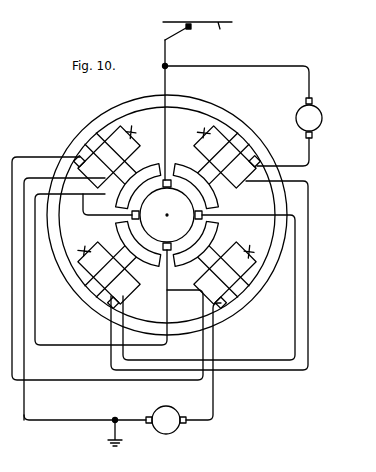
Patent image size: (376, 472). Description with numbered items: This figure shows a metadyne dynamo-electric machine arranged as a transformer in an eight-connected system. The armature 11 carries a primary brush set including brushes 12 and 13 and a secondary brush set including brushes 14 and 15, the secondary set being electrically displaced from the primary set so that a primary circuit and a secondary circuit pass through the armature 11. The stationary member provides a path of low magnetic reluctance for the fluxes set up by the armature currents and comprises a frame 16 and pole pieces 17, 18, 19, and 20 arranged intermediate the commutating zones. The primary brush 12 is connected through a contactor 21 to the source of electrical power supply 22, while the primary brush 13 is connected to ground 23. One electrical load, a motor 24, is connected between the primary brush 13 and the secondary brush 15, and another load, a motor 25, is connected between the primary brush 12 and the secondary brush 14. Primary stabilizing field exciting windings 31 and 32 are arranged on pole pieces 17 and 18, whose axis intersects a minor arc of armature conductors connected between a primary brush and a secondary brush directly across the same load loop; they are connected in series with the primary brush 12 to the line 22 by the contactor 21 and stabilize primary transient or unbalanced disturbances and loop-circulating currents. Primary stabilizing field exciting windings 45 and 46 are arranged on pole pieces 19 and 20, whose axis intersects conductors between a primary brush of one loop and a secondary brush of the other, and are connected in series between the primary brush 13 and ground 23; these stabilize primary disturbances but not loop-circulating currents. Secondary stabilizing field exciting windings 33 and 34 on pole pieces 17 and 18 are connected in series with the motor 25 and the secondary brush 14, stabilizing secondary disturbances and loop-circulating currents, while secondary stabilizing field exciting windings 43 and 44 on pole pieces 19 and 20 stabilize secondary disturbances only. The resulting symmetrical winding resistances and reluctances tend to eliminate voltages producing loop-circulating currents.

The armature 11 is at (133, 212).
The primary brush 12 is at (164, 183).
The primary brush 13 is at (164, 251).
The secondary brush 14 is at (203, 214).
The secondary brush 15 is at (146, 233).
The frame 16 is at (255, 297).
The pole piece 17 is at (230, 184).
The pole piece 18 is at (124, 279).
The pole piece 19 is at (208, 248).
The pole piece 20 is at (128, 151).
The contactor 21 is at (188, 31).
The source of electrical power supply 22 is at (219, 27).
The ground 23 is at (112, 437).
The motor 24 is at (173, 432).
The motor 25 is at (321, 116).
The primary stabilizing field exciting winding 31 is at (167, 172).
The primary stabilizing field exciting winding 32 is at (114, 246).
The secondary stabilizing field exciting winding 33 is at (220, 146).
The secondary stabilizing field exciting winding 34 is at (90, 258).
The secondary stabilizing field exciting winding 43 is at (237, 268).
The secondary stabilizing field exciting winding 44 is at (119, 140).
The primary stabilizing field exciting winding 45 is at (243, 256).
The primary stabilizing field exciting winding 46 is at (138, 163).